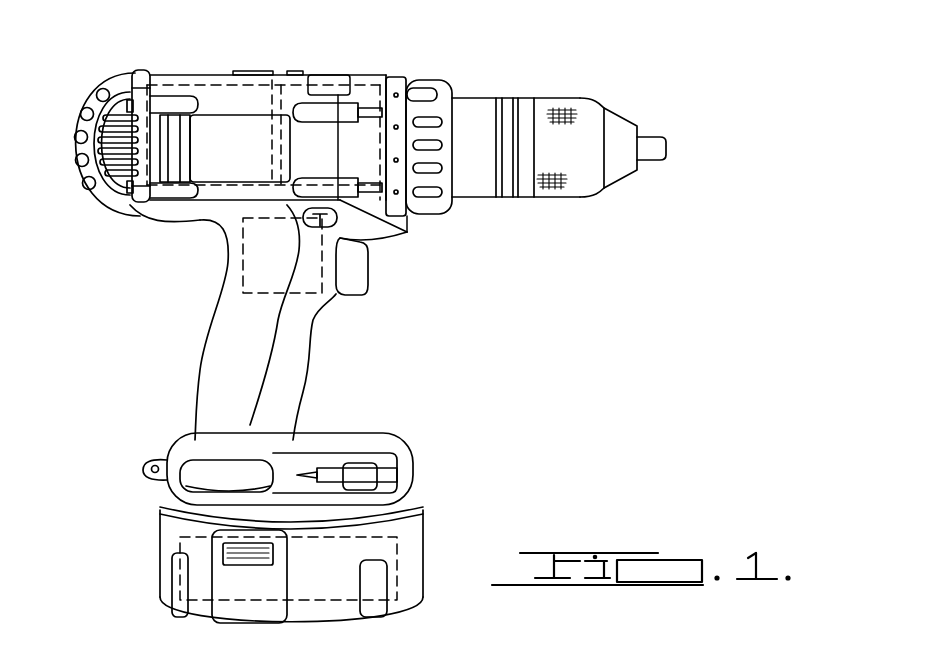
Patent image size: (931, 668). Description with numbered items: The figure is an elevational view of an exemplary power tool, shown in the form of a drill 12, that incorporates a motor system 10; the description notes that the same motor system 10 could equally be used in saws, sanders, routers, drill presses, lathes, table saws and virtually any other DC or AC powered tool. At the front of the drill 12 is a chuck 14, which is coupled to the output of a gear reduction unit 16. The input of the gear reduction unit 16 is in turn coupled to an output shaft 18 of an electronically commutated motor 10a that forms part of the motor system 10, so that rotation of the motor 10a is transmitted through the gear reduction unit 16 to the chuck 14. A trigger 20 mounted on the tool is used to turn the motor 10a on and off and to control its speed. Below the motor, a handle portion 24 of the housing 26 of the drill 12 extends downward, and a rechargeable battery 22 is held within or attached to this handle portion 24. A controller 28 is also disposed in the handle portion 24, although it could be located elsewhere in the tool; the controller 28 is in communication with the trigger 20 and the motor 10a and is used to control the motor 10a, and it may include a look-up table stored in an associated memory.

The motor system 10 is at (200, 205).
The electronically commutated motor 10a is at (204, 87).
The drill 12 is at (484, 251).
The chuck 14 is at (567, 195).
The gear reduction unit 16 is at (378, 188).
The output shaft 18 is at (278, 80).
The trigger 20 is at (365, 284).
The rechargeable battery 22 is at (413, 598).
The handle portion 24 is at (208, 385).
The housing 26 is at (312, 378).
The controller 28 is at (245, 296).